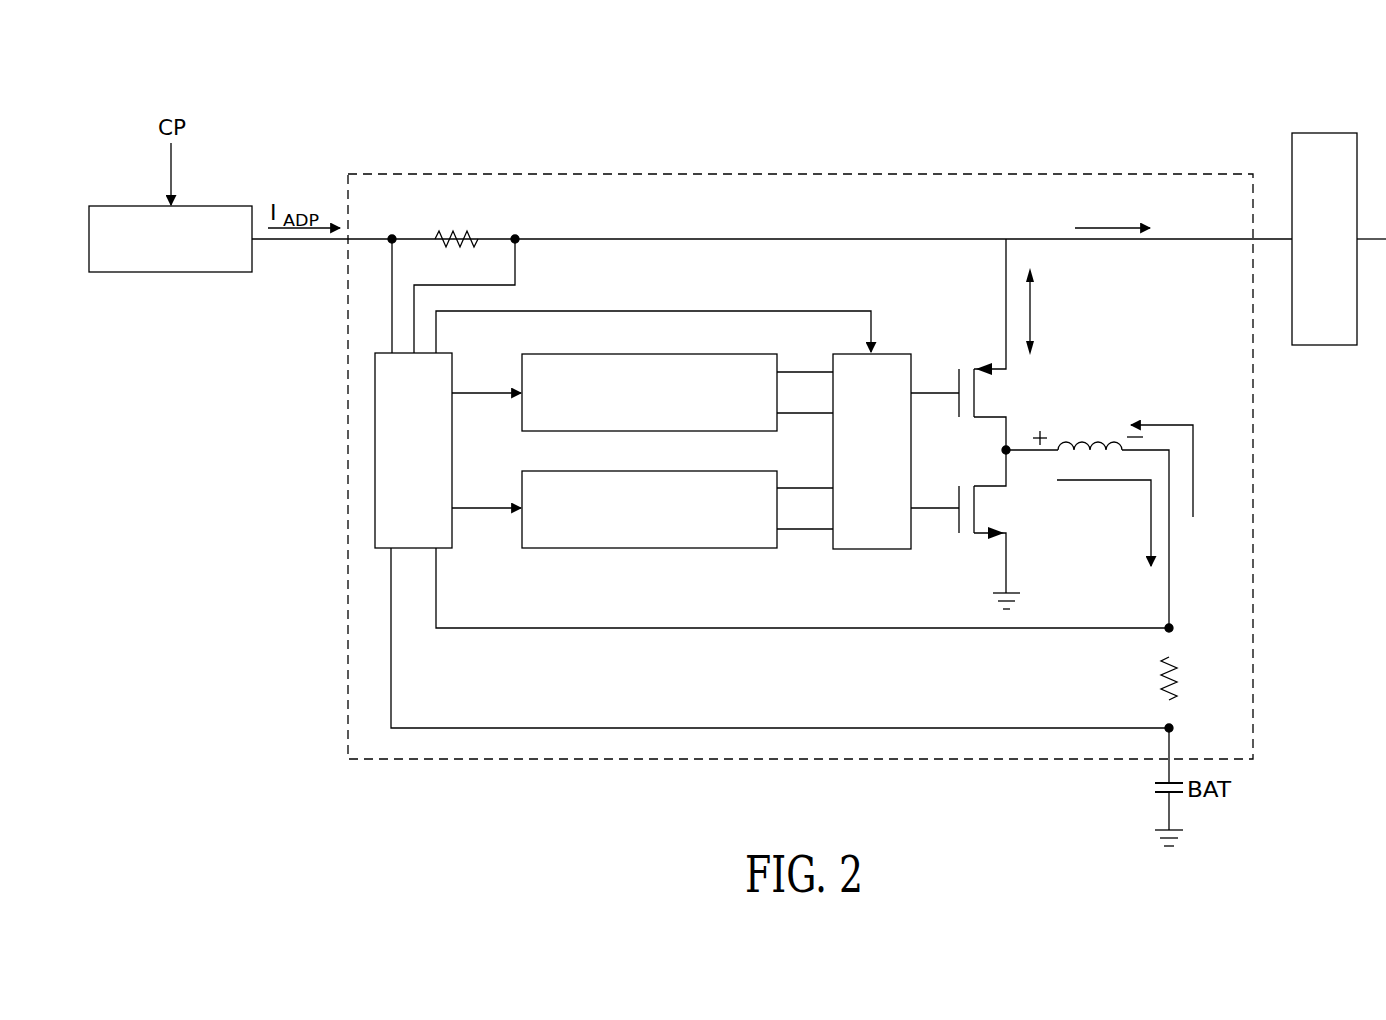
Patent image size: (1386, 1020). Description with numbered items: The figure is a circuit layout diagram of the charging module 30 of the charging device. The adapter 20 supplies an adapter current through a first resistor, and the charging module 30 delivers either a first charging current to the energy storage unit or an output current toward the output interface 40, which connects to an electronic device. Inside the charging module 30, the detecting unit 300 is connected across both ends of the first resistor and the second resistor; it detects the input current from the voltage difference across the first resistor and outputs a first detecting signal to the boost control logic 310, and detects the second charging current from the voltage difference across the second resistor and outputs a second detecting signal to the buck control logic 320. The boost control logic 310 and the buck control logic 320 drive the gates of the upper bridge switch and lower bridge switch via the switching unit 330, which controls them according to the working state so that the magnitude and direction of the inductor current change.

The adapter 20 is at (168, 272).
The charging module 30 is at (815, 173).
The output interface 40 is at (1323, 133).
The detecting unit 300 is at (375, 452).
The boost control logic 310 is at (567, 431).
The buck control logic 320 is at (627, 548).
The switching unit 330 is at (870, 549).